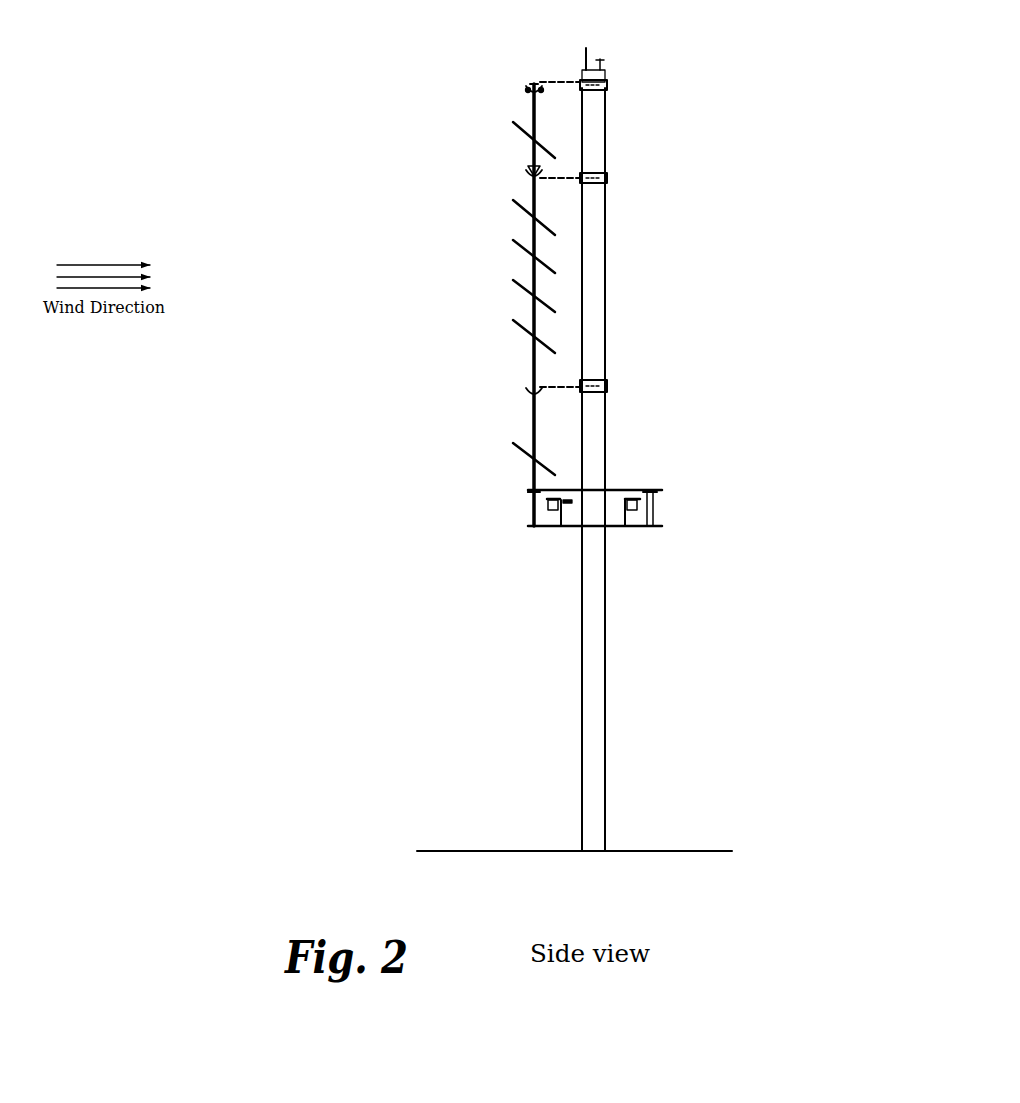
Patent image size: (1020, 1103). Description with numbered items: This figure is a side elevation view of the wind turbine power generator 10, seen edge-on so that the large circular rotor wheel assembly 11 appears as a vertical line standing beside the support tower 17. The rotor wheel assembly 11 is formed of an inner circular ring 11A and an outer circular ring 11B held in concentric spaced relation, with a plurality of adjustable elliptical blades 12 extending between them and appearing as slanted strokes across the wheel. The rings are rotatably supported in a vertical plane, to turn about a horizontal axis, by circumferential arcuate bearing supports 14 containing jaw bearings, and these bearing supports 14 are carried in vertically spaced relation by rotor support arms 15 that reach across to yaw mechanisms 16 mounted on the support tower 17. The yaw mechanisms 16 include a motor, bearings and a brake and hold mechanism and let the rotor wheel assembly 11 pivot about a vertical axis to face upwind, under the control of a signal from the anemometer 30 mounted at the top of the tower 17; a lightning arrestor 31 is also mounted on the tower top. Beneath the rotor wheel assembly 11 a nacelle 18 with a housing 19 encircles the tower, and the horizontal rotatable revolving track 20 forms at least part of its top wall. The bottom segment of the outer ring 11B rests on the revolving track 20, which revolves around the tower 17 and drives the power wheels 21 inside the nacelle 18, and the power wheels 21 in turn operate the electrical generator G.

The wind turbine power generator 10 is at (292, 377).
The rotor wheel assembly 11 is at (478, 302).
The inner circular ring 11A is at (526, 164).
The outer circular ring 11B is at (528, 96).
The adjustable elliptical blades 12 is at (548, 150).
The circumferential arcuate bearing supports 14 is at (530, 84).
The rotor support arms 15 is at (549, 77).
The yaw mechanisms 16 is at (608, 379).
The support tower 17 is at (604, 680).
The nacelle 18 is at (636, 471).
The housing 19 is at (657, 508).
The horizontal rotatable revolving track 20 is at (665, 490).
The power wheels 21 is at (638, 552).
The anemometer 30 is at (605, 63).
The lightning arrestor 31 is at (582, 62).
The electrical generator G is at (570, 505).